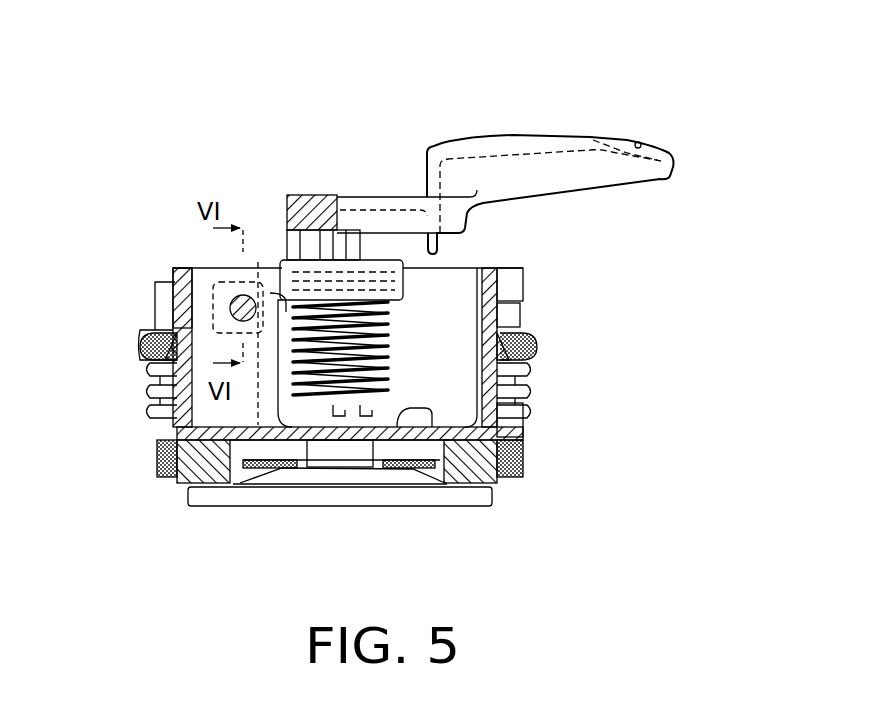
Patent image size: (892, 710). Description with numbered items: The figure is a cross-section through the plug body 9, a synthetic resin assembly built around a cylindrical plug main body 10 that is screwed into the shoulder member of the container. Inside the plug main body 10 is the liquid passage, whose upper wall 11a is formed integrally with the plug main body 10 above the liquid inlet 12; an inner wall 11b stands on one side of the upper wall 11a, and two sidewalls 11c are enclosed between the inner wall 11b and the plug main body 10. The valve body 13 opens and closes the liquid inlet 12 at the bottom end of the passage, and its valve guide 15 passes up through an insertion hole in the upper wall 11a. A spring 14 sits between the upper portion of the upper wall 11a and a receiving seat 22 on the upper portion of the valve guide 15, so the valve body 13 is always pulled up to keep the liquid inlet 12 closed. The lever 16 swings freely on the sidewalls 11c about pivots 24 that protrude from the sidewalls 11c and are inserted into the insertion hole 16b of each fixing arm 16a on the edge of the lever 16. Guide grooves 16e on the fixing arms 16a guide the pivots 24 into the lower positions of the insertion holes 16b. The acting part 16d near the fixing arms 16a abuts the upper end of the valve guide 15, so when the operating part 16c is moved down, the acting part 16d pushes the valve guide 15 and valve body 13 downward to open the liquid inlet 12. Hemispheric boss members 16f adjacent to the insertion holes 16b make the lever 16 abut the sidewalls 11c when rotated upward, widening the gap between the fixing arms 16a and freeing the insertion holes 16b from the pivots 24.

The plug body 9 is at (367, 67).
The plug main body 10 is at (530, 290).
The upper wall 11a is at (400, 415).
The inner wall 11b is at (263, 466).
The sidewalls 11c is at (210, 400).
The liquid inlet 12 is at (256, 450).
The valve body 13 is at (395, 497).
The spring 14 is at (395, 322).
The valve guide 15 is at (356, 290).
The lever 16 is at (515, 127).
The fixing arms 16a is at (218, 293).
The insertion hole 16b is at (173, 315).
The operating part 16c is at (642, 141).
The acting part 16d is at (368, 233).
The guide grooves 16e is at (140, 373).
The boss members 16f is at (305, 265).
The receiving seat 22 is at (403, 284).
The pivots 24 is at (244, 294).